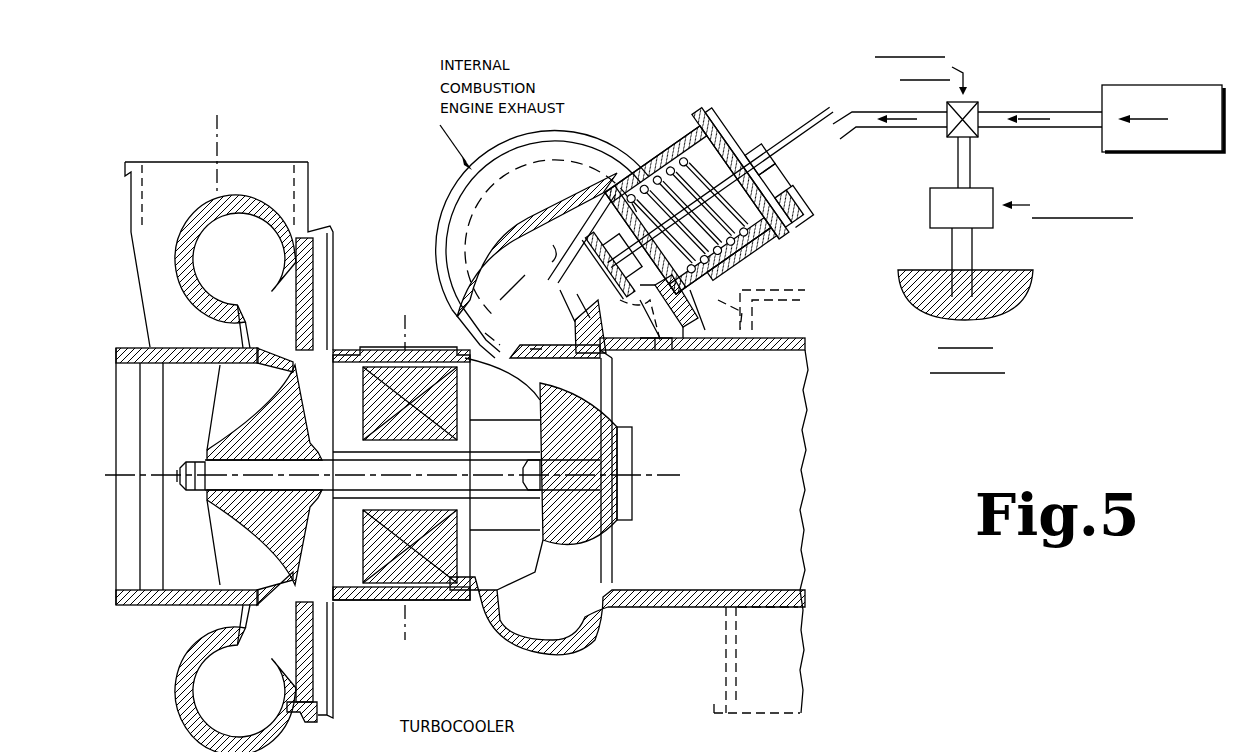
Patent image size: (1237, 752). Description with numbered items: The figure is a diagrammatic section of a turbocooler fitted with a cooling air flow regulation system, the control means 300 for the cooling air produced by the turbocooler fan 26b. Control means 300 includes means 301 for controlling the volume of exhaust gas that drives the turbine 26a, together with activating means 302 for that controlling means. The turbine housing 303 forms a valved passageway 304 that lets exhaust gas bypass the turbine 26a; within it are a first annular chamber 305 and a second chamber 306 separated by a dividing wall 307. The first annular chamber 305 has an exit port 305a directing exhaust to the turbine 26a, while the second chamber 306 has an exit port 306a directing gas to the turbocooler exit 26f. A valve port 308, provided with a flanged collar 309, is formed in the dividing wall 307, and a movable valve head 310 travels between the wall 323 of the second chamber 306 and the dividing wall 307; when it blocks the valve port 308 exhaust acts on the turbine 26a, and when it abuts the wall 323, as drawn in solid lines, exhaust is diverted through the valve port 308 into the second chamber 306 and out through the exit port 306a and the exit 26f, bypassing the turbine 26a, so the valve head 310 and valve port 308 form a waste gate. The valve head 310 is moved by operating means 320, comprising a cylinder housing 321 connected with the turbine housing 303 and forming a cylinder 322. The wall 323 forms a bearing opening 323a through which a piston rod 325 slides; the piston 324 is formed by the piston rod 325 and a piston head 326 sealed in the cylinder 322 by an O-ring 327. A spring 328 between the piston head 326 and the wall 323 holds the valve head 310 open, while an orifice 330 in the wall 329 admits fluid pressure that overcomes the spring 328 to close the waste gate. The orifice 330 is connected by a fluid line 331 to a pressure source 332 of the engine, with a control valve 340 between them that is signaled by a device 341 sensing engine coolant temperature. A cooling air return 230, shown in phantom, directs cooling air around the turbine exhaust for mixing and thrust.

The turbine 26a is at (621, 403).
The turbocooler fan 26b is at (212, 392).
The turbocooler exit 26f is at (795, 500).
The cooling air return 230 is at (727, 672).
The means for controlling the cooling air 300 is at (727, 88).
The means for controlling the volume of exhaust gas 301 is at (650, 138).
The activating means 302 is at (979, 143).
The turbine housing 303 is at (588, 185).
The valved passageway 304 is at (578, 230).
The first annular chamber 305 is at (517, 306).
The exit port 305a is at (556, 357).
The second chamber 306 is at (652, 352).
The exit port 306a is at (660, 352).
The dividing wall 307 is at (553, 246).
The valve port 308 is at (577, 294).
The flanged collar 309 is at (602, 355).
The valve head 310 is at (658, 350).
The means to operate the valve head 320 is at (686, 129).
The cylinder housing 321 is at (729, 312).
The cylinder 322 is at (682, 300).
The wall 323 is at (618, 198).
The bearing opening 323a is at (562, 197).
The piston 324 is at (762, 184).
The piston rod 325 is at (765, 210).
The piston head 326 is at (790, 234).
The O-ring 327 is at (798, 244).
The spring 328 is at (748, 250).
The wall 329 is at (724, 114).
The orifice 330 is at (772, 157).
The fluid line 331 is at (872, 112).
The source of fluid pressure 332 is at (1113, 85).
The control valve 340 is at (972, 100).
The device adapted to sense the temperature of the coolant 341 is at (997, 228).